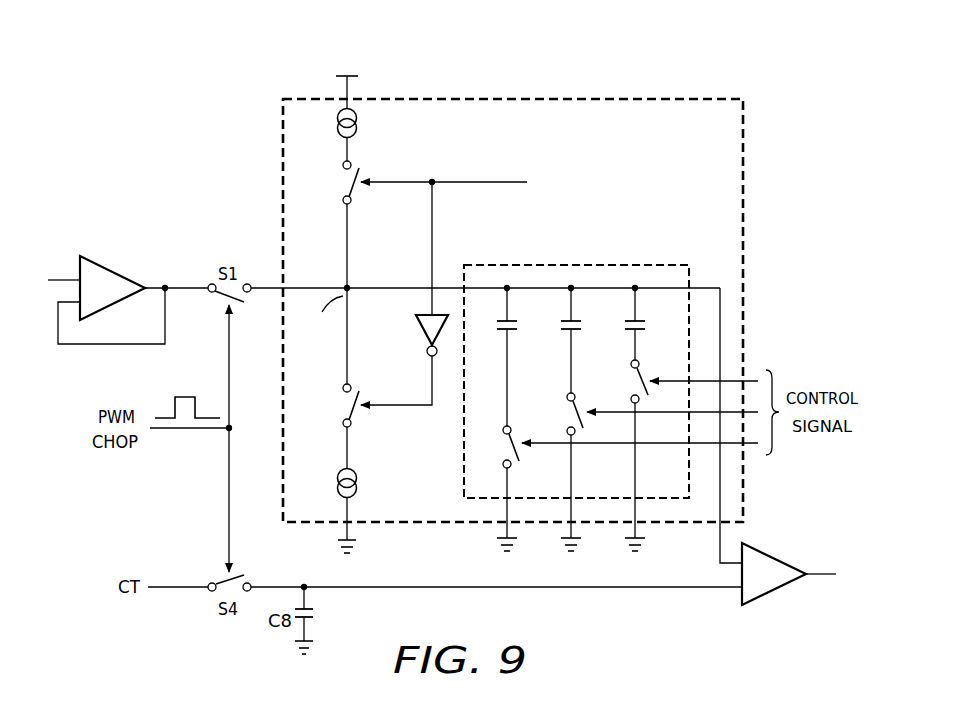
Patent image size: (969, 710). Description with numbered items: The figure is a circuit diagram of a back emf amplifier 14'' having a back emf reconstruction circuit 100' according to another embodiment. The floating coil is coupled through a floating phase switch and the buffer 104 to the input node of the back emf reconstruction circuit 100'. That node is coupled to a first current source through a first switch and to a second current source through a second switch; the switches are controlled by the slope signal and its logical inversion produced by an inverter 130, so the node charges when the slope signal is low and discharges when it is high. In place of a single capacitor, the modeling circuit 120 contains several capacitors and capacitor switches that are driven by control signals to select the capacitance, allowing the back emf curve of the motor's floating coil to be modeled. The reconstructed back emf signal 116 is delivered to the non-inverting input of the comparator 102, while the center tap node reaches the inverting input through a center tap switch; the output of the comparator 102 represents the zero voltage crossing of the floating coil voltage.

The back emf amplifier 14'' is at (93, 251).
The buffer 104 is at (113, 267).
The back emf reconstruction circuit 100' is at (547, 304).
The modeling circuit 120 is at (648, 265).
The reconstructed back emf signal 116 is at (700, 287).
The inverter 130 is at (420, 333).
The comparator 102 is at (776, 592).